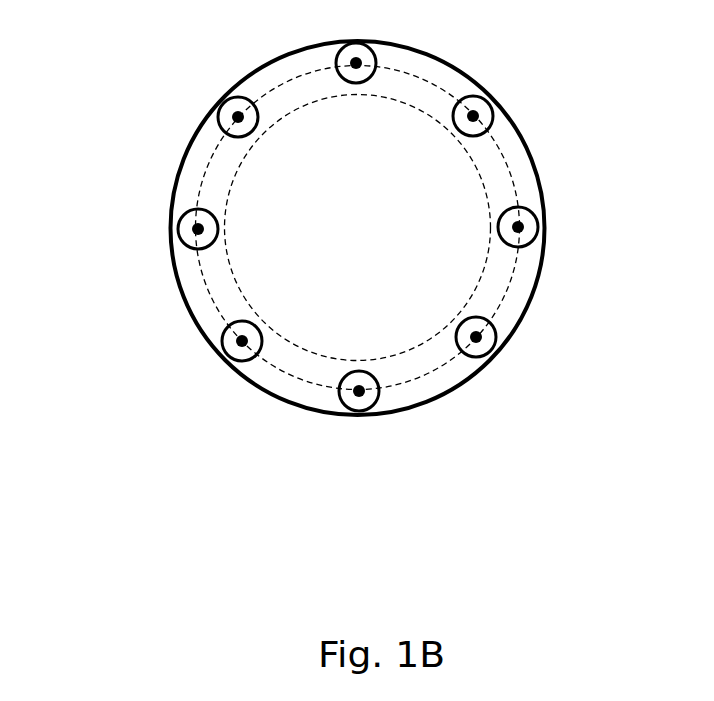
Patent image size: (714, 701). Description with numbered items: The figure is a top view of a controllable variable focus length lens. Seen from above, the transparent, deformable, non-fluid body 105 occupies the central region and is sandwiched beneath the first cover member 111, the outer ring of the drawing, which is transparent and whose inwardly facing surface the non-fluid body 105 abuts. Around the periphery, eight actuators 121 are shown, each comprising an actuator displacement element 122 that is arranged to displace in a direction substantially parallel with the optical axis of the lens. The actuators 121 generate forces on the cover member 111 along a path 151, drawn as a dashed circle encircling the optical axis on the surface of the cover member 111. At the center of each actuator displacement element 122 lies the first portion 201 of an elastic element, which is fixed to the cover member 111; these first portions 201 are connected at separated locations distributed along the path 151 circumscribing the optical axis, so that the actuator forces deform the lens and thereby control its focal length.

The non-fluid body 105 is at (467, 182).
The first cover member 111 is at (552, 225).
The actuator 121 is at (226, 99).
The actuator displacement element 122 is at (143, 117).
The first portion 201 is at (236, 117).
The path 151 is at (203, 180).